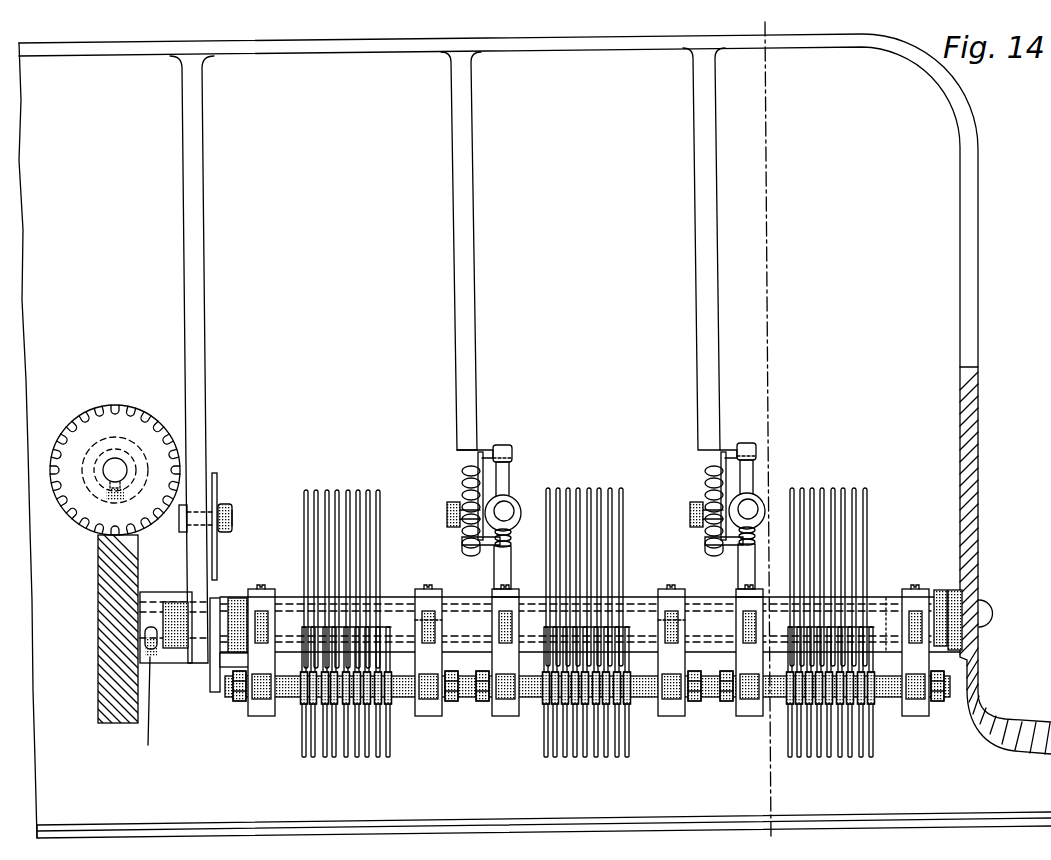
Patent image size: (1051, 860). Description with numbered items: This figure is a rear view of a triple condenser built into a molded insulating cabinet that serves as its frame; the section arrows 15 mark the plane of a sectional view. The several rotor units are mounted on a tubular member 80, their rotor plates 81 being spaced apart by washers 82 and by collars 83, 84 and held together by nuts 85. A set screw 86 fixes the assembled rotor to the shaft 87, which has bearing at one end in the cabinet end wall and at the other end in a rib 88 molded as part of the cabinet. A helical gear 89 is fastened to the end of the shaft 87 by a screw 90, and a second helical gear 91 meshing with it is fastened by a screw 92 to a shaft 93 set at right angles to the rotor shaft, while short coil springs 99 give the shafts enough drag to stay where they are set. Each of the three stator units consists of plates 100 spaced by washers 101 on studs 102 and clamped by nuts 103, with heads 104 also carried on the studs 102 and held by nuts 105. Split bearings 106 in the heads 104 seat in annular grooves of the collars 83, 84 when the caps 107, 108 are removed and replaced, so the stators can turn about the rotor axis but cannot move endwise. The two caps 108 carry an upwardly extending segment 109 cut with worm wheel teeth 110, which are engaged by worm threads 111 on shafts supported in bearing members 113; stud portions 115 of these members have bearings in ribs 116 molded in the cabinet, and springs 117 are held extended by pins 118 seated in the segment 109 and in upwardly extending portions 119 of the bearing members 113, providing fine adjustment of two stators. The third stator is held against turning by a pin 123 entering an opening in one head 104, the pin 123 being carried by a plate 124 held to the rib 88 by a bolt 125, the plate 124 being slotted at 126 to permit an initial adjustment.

The section line 15- 15 is at (739, 26).
The tubular member 80 is at (886, 598).
The rotor plates 81 is at (327, 489).
The washers 82 is at (352, 490).
The collar 83 is at (414, 596).
The collar 84 is at (296, 596).
The nuts 85 is at (237, 598).
The set screw 86 is at (957, 652).
The shaft 87 is at (992, 613).
The rib 88 is at (207, 312).
The helical gear 89 is at (98, 571).
The screw 90 is at (147, 699).
The helical gear 91 is at (120, 404).
The screw 92 is at (113, 495).
The shaft 93 is at (120, 460).
The coil springs 99 is at (173, 601).
The plates 100 is at (367, 758).
The washers 101 is at (315, 706).
The studs 102 is at (441, 700).
The nuts 103 is at (292, 706).
The heads 104 is at (262, 718).
The nuts 105 is at (238, 703).
The split bearings 106 is at (259, 588).
The caps 107 is at (428, 588).
The caps 108 is at (494, 592).
The segment 109 is at (500, 566).
The worm wheel teeth 110 is at (514, 539).
The worm threads 111 is at (508, 505).
The bearing members 113 is at (520, 503).
The stud portions 115 is at (447, 515).
The ribs 116 is at (476, 298).
The springs 117 is at (462, 489).
The pins 118 is at (486, 450).
The upwardly extending portions 119 is at (510, 445).
The pin 123 is at (237, 666).
The plate 124 is at (212, 688).
The bolt 125 is at (231, 512).
The slot 126 is at (215, 500).